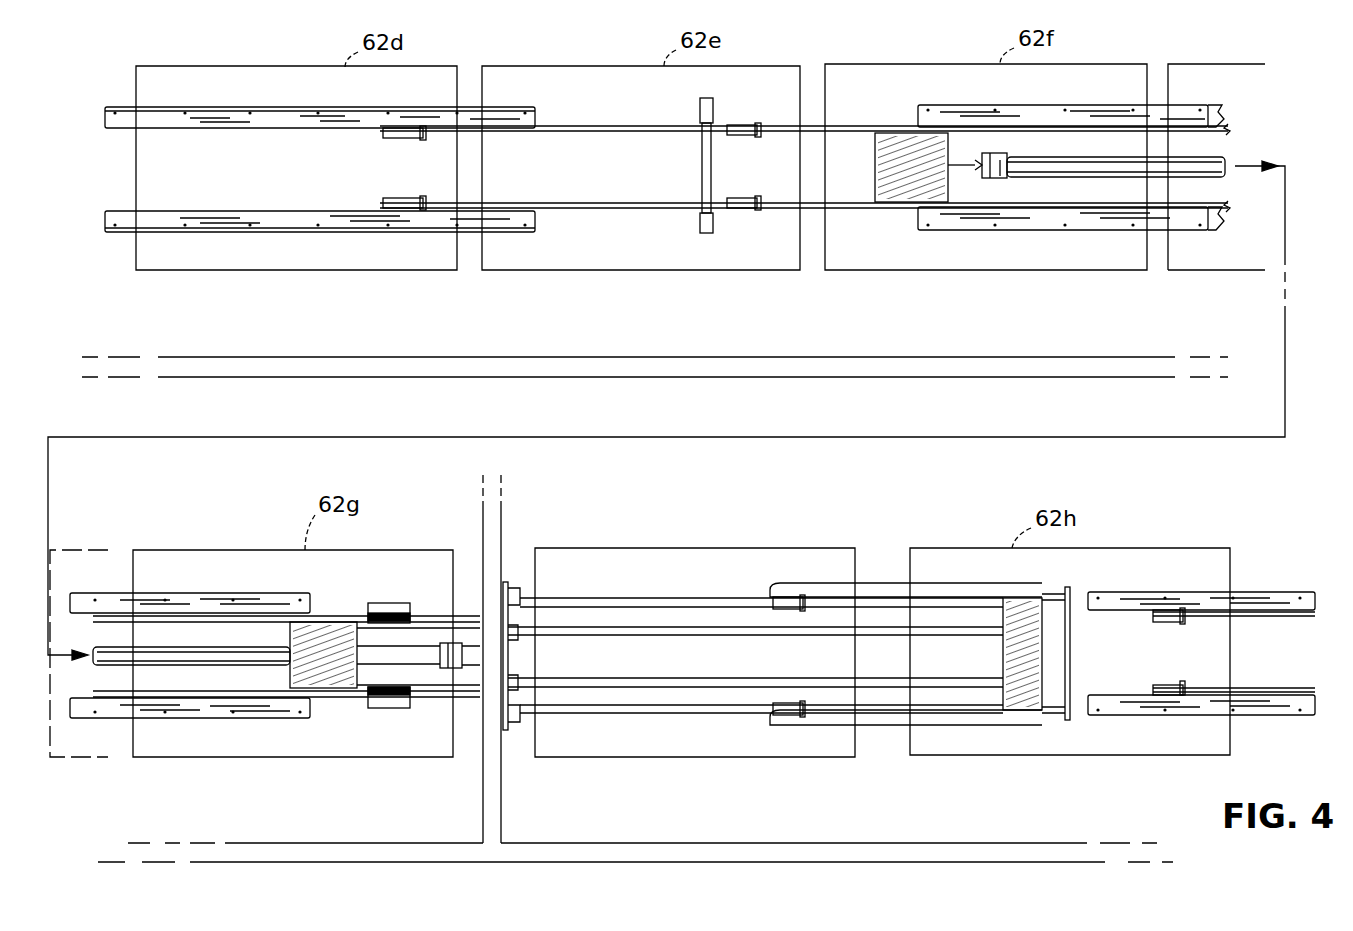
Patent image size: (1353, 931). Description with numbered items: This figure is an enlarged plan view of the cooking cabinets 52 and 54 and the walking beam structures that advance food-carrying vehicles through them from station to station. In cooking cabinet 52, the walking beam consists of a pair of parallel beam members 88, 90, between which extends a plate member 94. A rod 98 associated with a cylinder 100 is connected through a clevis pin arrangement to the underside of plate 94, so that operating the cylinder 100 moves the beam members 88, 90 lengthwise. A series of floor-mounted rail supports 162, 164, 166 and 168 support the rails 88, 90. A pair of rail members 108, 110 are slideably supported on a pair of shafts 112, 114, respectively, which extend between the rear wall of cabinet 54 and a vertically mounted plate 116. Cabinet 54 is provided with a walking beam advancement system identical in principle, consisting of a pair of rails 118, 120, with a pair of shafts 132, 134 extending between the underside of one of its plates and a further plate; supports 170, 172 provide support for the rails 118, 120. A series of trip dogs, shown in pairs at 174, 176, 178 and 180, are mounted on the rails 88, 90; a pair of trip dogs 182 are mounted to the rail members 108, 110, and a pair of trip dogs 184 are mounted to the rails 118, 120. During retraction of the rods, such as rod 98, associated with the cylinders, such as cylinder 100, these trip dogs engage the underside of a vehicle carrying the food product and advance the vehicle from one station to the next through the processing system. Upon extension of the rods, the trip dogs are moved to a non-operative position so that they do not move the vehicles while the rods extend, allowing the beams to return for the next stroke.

The cooking cabinet 52 is at (312, 822).
The cabinet 54 is at (819, 822).
The beam member 88 is at (555, 132).
The beam member 90 is at (568, 203).
The plate member 94 is at (875, 180).
The rod 98 is at (985, 155).
The cylinder 100 is at (1088, 158).
The rail member 108 is at (872, 583).
The rail member 110 is at (870, 725).
The shaft 112 is at (680, 598).
The shaft 114 is at (665, 735).
The vertically mounted plate 116 is at (1070, 660).
The rail 118 is at (1275, 618).
The rail 120 is at (1302, 688).
The shaft 132 is at (652, 635).
The shaft 134 is at (705, 678).
The rail support 162 is at (222, 107).
The rail support 164 is at (222, 232).
The rail support 166 is at (1000, 105).
The rail support 168 is at (1005, 230).
The support 170 is at (1140, 592).
The support 172 is at (1125, 715).
The trip dogs 174 is at (385, 138).
The trip dogs 176 is at (738, 137).
The trip dogs 178 is at (1000, 180).
The trip dogs 180 is at (382, 603).
The trip dogs 182 is at (795, 609).
The trip dogs 184 is at (1165, 623).